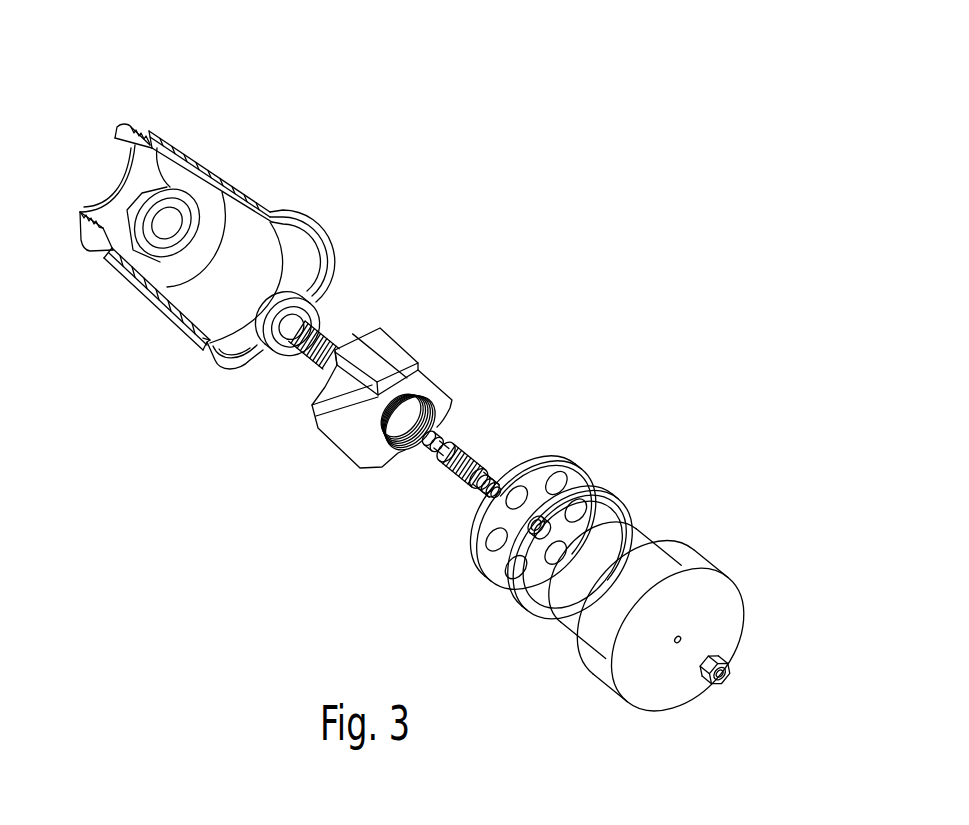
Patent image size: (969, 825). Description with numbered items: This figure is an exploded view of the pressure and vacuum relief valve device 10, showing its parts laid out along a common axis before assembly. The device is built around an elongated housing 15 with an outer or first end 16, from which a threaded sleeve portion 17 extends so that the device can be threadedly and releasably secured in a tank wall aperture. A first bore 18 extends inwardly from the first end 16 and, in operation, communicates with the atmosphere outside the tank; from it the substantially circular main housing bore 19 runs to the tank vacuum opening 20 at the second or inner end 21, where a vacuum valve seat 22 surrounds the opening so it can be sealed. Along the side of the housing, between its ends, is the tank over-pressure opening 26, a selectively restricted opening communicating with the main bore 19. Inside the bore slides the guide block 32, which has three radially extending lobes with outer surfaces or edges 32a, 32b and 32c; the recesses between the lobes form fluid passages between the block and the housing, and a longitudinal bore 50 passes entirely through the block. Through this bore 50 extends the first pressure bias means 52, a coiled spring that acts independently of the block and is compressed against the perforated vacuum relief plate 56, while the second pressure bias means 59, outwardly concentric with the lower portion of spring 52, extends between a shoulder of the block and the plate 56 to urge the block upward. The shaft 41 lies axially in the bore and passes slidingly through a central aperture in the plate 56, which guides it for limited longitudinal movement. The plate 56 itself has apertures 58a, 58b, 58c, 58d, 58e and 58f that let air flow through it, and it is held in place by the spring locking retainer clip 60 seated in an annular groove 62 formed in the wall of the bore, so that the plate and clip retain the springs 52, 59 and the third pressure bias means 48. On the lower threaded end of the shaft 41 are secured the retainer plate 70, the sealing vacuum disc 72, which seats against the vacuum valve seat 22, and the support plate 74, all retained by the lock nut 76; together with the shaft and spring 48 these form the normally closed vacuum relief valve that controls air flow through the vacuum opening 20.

The pressure and vacuum relief valve device 10 is at (303, 58).
The elongated housing 15 is at (230, 178).
The outer or first end 16 is at (115, 195).
The threaded sleeve portion 17 is at (135, 130).
The first bore 18 is at (110, 222).
The main housing bore 19 is at (260, 235).
The tank vacuum opening 20 is at (285, 258).
The second or inner end 21 is at (233, 376).
The vacuum valve seat 22 is at (220, 370).
The tank over-pressure opening 26 is at (112, 268).
The guide block 32 is at (376, 371).
The outer surface or edge of lobe 32a is at (358, 347).
The outer surface or edge of lobe 32b is at (421, 375).
The outer surface or edge of lobe 32c is at (365, 455).
The shaft 41 is at (421, 508).
The third pressure bias means 48 is at (480, 465).
The longitudinal hole or bore 50 is at (420, 378).
The first pressure bias means 52 is at (308, 363).
The perforated vacuum relief plate 56 is at (526, 523).
The aperture 58a is at (520, 500).
The aperture 58b is at (550, 482).
The aperture 58c is at (568, 512).
The aperture 58d is at (549, 556).
The aperture 58e is at (510, 570).
The aperture 58f is at (496, 550).
The second pressure bias means 59 is at (404, 452).
The spring locking retainer clip 60 is at (621, 504).
The annular groove 62 is at (206, 342).
The retainer plate 70 is at (628, 522).
The sealing vacuum disc 72 is at (694, 550).
The support plate 74 is at (724, 610).
The lock nut 76 is at (724, 688).